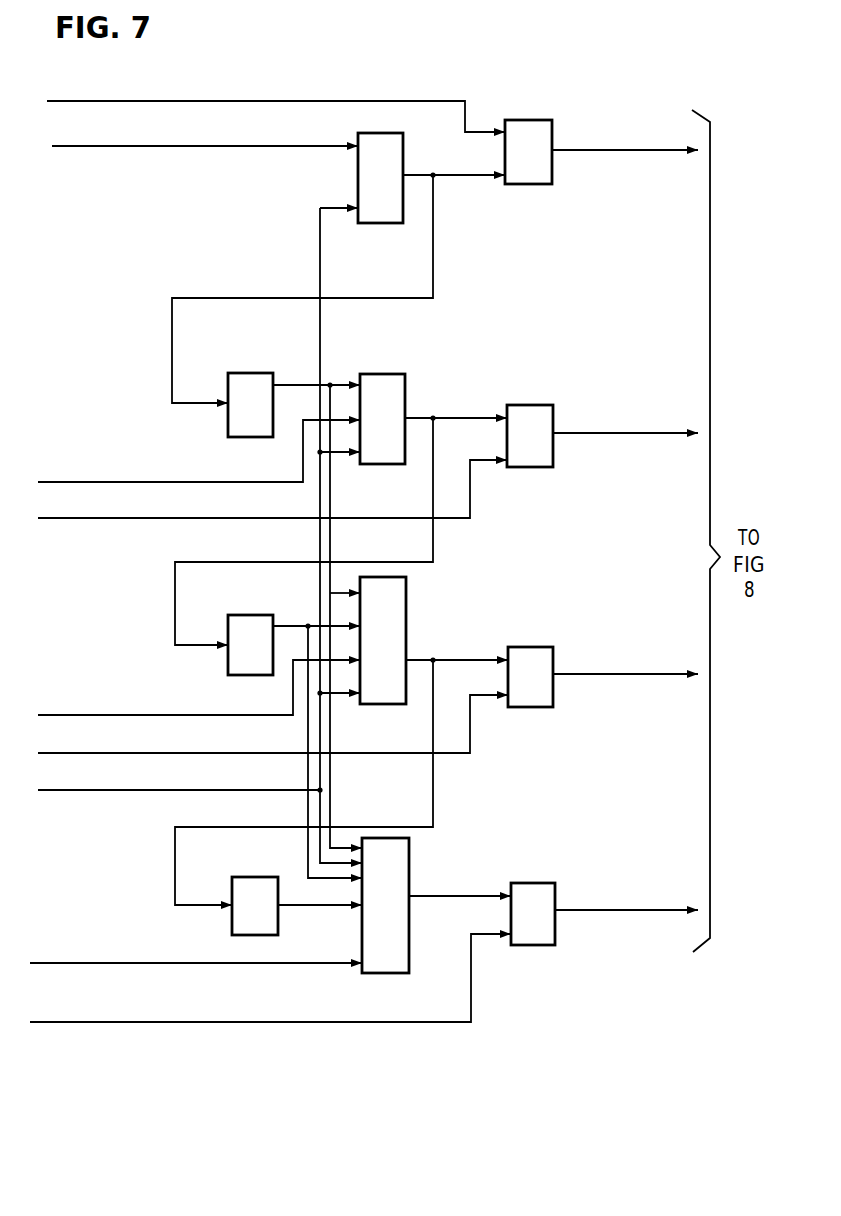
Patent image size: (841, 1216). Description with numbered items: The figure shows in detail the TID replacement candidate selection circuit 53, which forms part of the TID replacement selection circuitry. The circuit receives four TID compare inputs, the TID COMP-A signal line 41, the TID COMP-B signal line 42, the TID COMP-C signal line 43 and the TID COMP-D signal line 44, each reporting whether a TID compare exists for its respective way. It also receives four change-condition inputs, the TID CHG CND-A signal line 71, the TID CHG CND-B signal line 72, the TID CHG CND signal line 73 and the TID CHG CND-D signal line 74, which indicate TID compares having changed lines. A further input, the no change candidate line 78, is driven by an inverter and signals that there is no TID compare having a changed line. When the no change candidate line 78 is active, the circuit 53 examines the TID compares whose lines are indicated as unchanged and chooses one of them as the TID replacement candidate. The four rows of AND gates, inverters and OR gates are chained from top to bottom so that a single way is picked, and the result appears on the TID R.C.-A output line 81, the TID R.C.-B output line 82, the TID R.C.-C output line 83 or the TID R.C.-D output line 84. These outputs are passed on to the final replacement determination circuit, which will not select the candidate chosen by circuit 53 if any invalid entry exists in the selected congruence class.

The TID COMP-A signal line 41 is at (171, 148).
The TID COMP-B signal line 42 is at (60, 481).
The TID COMP-C signal line 43 is at (55, 714).
The TID COMP-D signal line 44 is at (55, 966).
The TID replacement candidate selection circuit 53 is at (323, 1049).
The TID CHG CND-A signal line 71 is at (403, 99).
The TID CHG CND-B signal line 72 is at (137, 520).
The TID CHG CND signal line 73 is at (52, 755).
The TID CHG CND-D signal line 74 is at (142, 1025).
The no change candidate line 78 is at (68, 793).
The TID R.C.-A output line 81 is at (633, 152).
The TID R.C.-B output line 82 is at (641, 435).
The TID R.C.-C output line 83 is at (628, 677).
The TID R.C.-D output line 84 is at (628, 914).